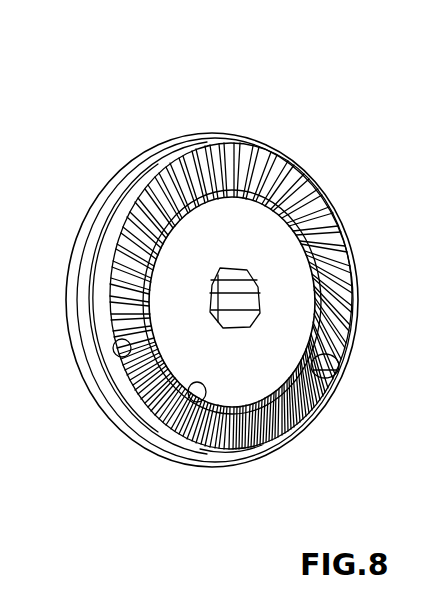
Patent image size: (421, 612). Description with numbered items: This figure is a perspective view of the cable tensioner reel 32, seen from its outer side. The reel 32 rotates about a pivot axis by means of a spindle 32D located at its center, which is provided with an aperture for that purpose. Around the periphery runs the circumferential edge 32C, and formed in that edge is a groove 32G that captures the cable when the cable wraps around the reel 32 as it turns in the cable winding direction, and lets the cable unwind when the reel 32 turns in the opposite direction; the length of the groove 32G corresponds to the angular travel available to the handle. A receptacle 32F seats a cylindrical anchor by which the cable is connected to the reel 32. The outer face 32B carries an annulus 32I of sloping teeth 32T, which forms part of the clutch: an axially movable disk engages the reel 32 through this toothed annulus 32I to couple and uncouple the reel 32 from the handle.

The cable tensioner reel 32 is at (216, 62).
The outer face 32B is at (252, 222).
The circumferential edge 32C is at (186, 141).
The spindle 32D is at (237, 318).
The receptacle 32F is at (330, 383).
The groove 32G is at (116, 406).
The annulus 32I is at (222, 462).
The sloping teeth 32T is at (200, 425).